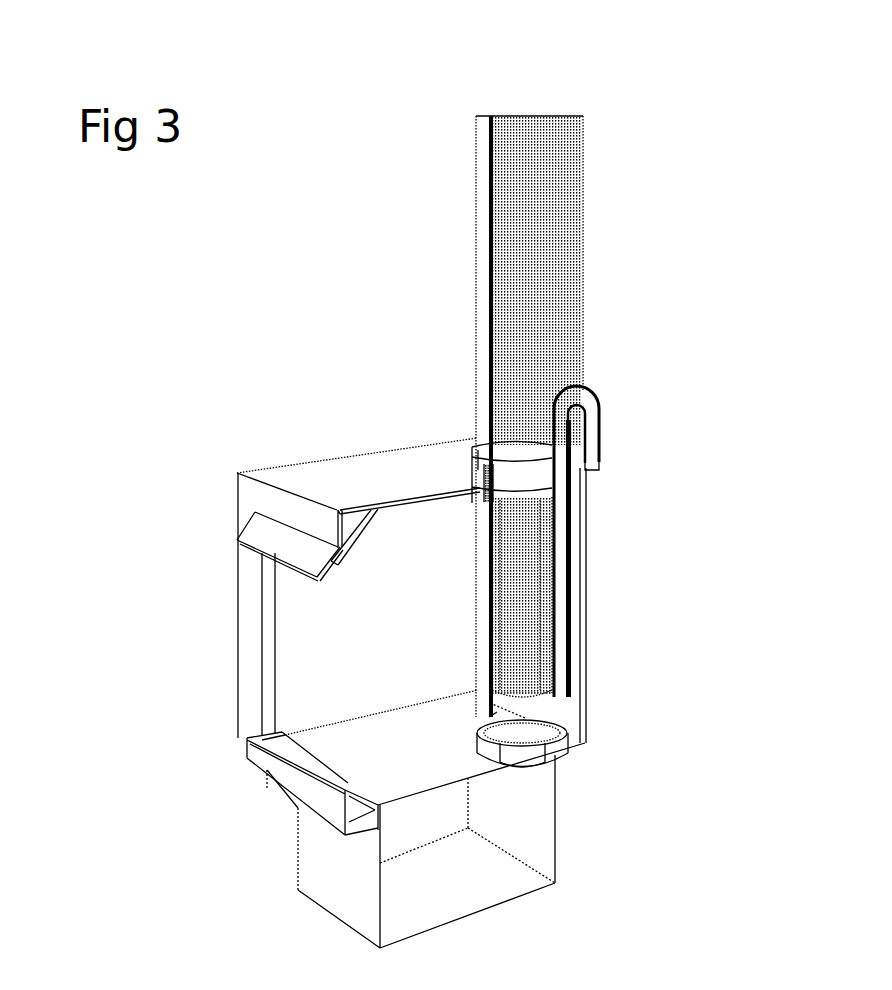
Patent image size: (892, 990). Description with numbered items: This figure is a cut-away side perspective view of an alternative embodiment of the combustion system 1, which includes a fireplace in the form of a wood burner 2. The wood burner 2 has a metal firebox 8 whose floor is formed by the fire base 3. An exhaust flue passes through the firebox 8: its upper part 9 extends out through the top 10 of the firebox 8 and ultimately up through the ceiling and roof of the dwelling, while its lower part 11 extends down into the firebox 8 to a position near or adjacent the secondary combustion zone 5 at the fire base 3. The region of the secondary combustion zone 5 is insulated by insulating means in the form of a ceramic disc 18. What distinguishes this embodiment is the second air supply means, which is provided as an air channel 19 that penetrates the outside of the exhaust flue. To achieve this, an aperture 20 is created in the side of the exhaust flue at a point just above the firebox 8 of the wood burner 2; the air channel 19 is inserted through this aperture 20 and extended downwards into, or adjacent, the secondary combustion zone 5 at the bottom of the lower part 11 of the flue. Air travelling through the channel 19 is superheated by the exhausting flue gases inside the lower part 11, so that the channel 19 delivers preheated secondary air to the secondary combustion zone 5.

The combustion system 1 is at (257, 391).
The wood burner 2 is at (226, 476).
The fire base 3 is at (363, 755).
The secondary combustion zone 5 is at (540, 712).
The firebox 8 is at (245, 608).
The upper part of the exhaust flue 9 is at (553, 268).
The top of the firebox 10 is at (385, 478).
The lower part of the exhaust flue 11 is at (513, 622).
The ceramic disc 18 is at (522, 743).
The air channel 19 is at (560, 552).
The aperture 20 is at (578, 386).